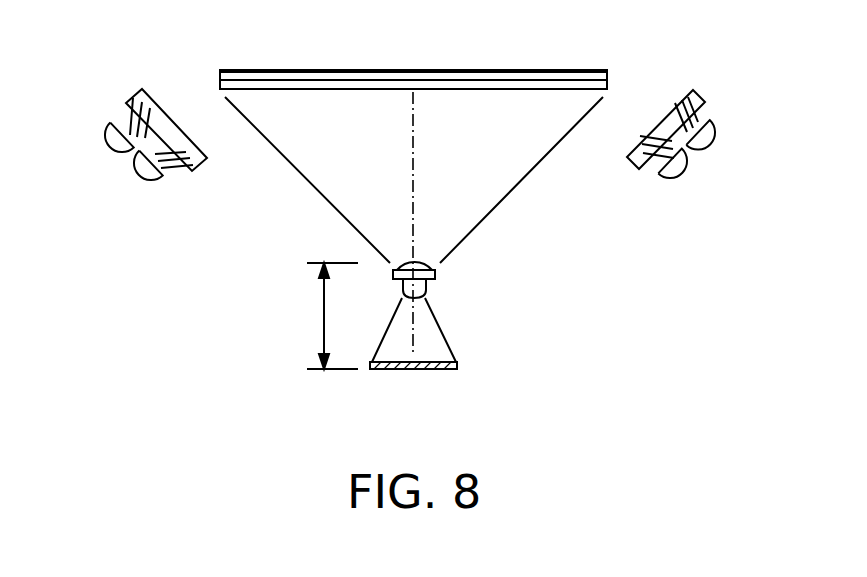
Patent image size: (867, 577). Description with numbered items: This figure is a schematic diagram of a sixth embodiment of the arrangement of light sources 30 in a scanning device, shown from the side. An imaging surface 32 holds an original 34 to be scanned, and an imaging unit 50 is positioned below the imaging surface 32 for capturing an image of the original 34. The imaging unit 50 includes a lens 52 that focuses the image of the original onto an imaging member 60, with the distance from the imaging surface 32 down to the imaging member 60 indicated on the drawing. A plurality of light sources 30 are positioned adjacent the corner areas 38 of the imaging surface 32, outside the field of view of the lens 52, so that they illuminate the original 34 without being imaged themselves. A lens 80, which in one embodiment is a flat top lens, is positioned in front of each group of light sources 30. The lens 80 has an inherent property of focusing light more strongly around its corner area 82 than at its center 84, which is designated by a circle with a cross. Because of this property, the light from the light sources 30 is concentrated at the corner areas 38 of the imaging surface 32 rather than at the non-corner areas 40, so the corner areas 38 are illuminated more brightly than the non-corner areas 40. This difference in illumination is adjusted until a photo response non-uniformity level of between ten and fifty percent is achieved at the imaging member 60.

The light sources 30 is at (113, 153).
The imaging surface 32 is at (488, 90).
The original 34 is at (300, 69).
The corner areas 38 is at (221, 80).
The non-corner areas 40 is at (393, 90).
The imaging unit 50 is at (314, 316).
The lens 52 is at (435, 278).
The imaging member 60 is at (457, 368).
The lens 80 is at (167, 113).
The corner area of the lens 82 is at (130, 97).
The center of the lens 84 is at (185, 125).